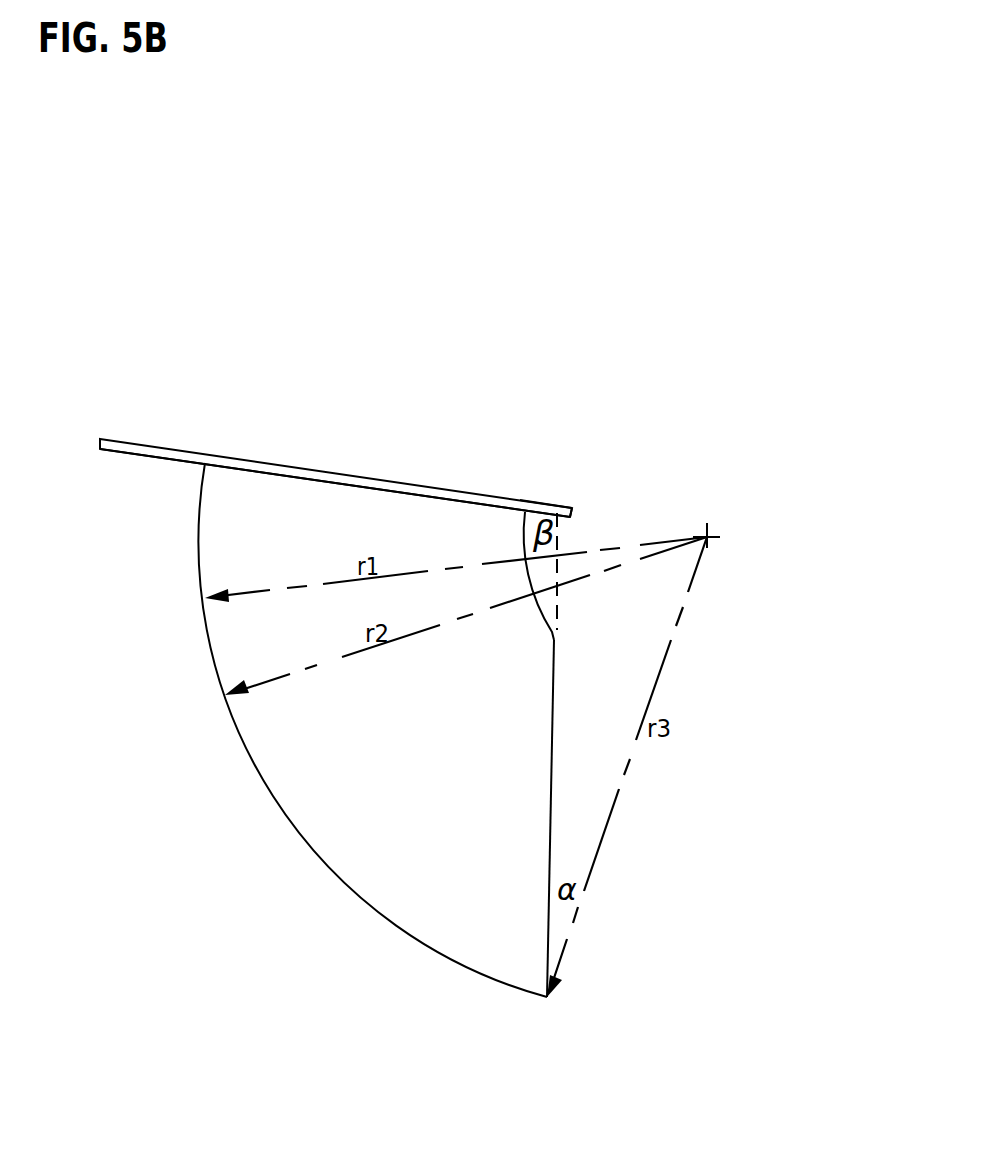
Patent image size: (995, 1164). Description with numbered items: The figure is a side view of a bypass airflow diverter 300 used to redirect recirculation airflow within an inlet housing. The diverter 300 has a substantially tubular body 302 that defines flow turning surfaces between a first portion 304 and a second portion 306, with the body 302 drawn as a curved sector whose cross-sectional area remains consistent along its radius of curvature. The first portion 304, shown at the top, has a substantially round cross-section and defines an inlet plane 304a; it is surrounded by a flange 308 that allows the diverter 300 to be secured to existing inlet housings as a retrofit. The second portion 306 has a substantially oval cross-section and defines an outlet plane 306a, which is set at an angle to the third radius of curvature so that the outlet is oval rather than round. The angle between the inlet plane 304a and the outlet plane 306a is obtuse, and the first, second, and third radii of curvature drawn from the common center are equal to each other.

The airflow diverter 300 is at (712, 504).
The tubular body 302 is at (420, 792).
The first portion 304 is at (344, 456).
The inlet plane 304a is at (424, 485).
The second portion 306 is at (562, 788).
The outlet plane 306a is at (554, 693).
The flange 308 is at (479, 492).